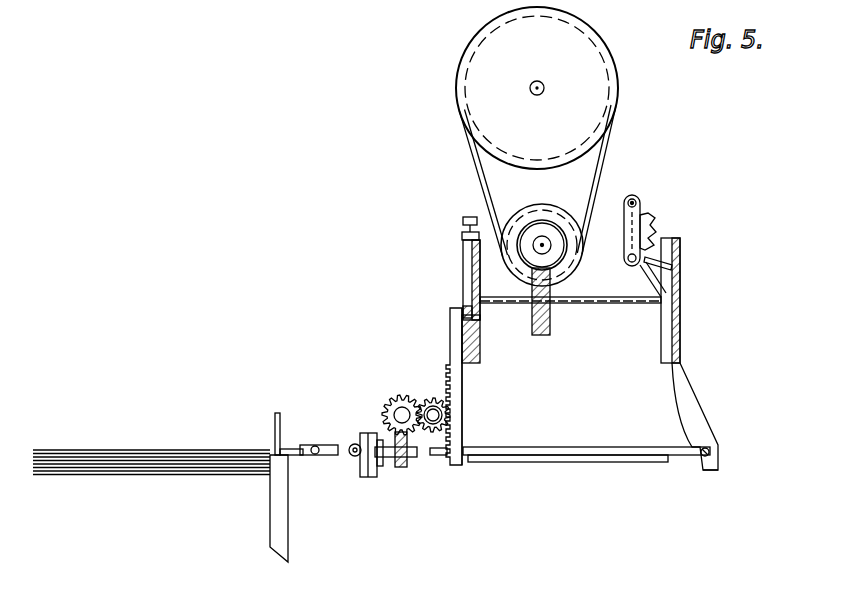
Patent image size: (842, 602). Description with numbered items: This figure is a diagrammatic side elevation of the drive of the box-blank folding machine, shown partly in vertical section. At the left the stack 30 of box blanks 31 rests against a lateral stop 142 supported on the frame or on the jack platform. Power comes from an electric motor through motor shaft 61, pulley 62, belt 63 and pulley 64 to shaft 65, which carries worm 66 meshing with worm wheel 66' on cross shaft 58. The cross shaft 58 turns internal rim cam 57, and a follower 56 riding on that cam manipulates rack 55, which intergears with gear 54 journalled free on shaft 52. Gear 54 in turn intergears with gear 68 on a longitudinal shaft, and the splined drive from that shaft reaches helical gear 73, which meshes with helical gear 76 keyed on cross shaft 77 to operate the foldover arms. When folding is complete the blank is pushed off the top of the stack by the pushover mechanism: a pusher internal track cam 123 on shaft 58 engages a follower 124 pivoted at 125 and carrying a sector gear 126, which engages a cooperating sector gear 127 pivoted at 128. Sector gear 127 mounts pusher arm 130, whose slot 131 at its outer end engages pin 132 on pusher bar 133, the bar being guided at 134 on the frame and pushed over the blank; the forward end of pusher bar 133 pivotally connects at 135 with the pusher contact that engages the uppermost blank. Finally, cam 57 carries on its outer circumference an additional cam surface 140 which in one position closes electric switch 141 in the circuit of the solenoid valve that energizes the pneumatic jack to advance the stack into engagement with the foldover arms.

The stack 30 is at (145, 449).
The box blanks 31 is at (163, 478).
The shaft 52 is at (432, 406).
The gear 54 is at (455, 398).
The rack 55 is at (453, 433).
The follower 56 is at (464, 308).
The internal rim cam 57 is at (466, 242).
The cross shaft 58 is at (507, 306).
The motor shaft 61 is at (544, 88).
The pulley 62 is at (618, 108).
The belt 63 is at (602, 160).
The pulley 64 is at (549, 208).
The shaft 65 is at (548, 250).
The worm 66 is at (531, 215).
The worm wheel 66' is at (566, 306).
The gear 68 is at (397, 398).
The helical gear 73 is at (383, 413).
The helical gear 76 is at (401, 468).
The cross shaft 77 is at (417, 461).
The pusher internal track cam 123 is at (681, 260).
The follower 124 is at (648, 274).
The pivot 125 is at (631, 253).
The sector gear 126 is at (657, 248).
The sector gear 127 is at (645, 212).
The pivot 128 is at (637, 200).
The pusher arm 130 is at (695, 411).
The slot 131 is at (711, 472).
The pin 132 is at (700, 456).
The pusher bar 133 is at (623, 452).
The guide 134 is at (566, 462).
The pivotal connection 135 is at (318, 457).
The additional cam surface 140 is at (464, 234).
The electric switch 141 is at (468, 216).
The lateral stop 142 is at (278, 530).